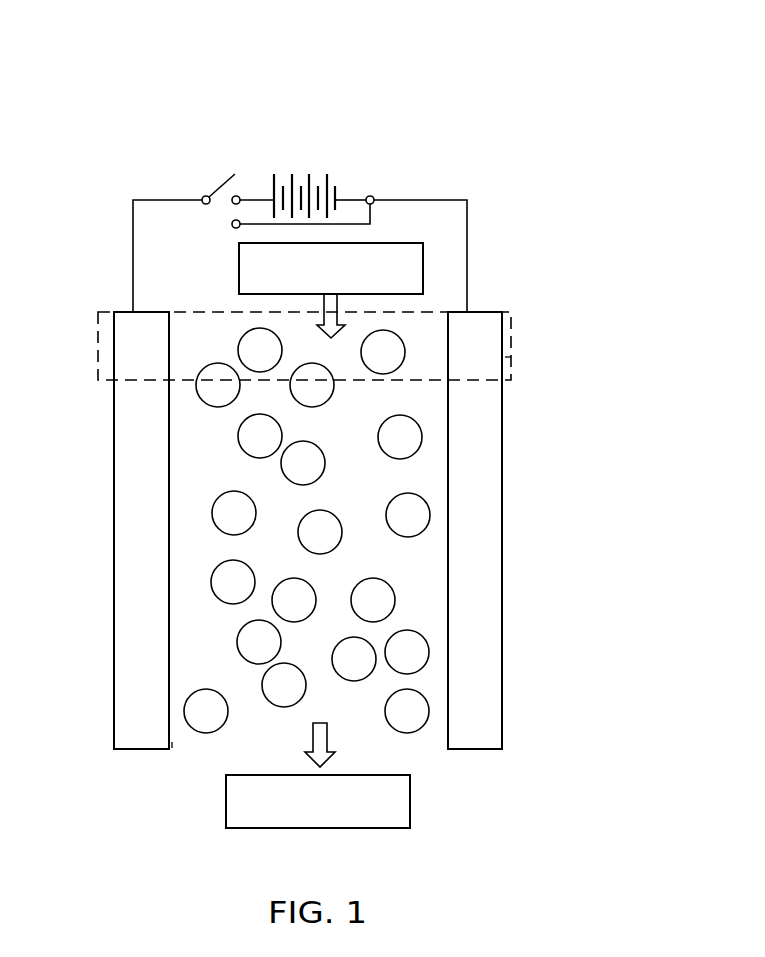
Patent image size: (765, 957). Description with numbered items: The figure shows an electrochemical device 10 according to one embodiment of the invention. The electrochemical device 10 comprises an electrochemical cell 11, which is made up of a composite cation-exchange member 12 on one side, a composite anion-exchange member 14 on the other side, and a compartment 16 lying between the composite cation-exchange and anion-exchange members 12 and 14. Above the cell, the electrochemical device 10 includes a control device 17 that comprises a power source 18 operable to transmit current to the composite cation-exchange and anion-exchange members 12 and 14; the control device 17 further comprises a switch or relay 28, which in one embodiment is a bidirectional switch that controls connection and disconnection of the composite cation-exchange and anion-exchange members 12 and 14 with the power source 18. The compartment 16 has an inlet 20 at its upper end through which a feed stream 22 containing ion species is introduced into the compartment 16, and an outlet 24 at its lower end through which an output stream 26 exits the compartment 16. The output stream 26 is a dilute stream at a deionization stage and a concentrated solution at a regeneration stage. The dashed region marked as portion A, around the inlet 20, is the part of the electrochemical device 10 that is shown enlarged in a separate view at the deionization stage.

The electrochemical device 10 is at (538, 65).
The electrochemical cell 11 is at (101, 622).
The composite cation-exchange member 12 is at (113, 588).
The composite anion-exchange member 14 is at (503, 528).
The compartment 16 is at (178, 735).
The control device 17 is at (318, 162).
The power source 18 is at (338, 192).
The inlet 20 is at (195, 325).
The feed stream 22 is at (238, 278).
The outlet 24 is at (242, 740).
The output stream 26 is at (410, 800).
The switch or relay 28 is at (222, 190).
The portion A is at (512, 357).